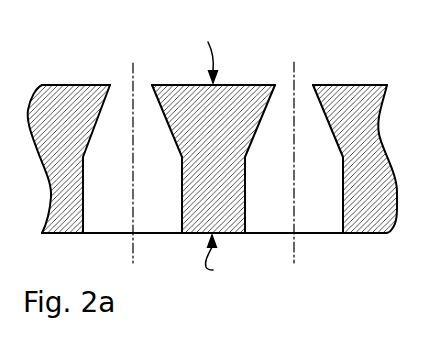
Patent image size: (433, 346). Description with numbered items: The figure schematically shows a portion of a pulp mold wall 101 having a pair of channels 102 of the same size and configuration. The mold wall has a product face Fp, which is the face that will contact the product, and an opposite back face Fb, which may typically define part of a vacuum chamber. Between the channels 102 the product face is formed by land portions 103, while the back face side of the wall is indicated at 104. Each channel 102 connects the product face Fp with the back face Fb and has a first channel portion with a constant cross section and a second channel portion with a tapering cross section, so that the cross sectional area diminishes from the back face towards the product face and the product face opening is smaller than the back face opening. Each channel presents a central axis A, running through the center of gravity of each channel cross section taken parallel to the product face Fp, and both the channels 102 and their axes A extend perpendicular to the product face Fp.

The body of the component (sectioned ring/disc) 101 is at (73, 193).
The groove / slot 102 is at (146, 102).
The land / top surface segment between grooves 103 is at (119, 85).
The bottom surface 104 is at (172, 233).
The central axis A is at (133, 168).
The product face Fp is at (203, 52).
The back face Fb is at (220, 262).